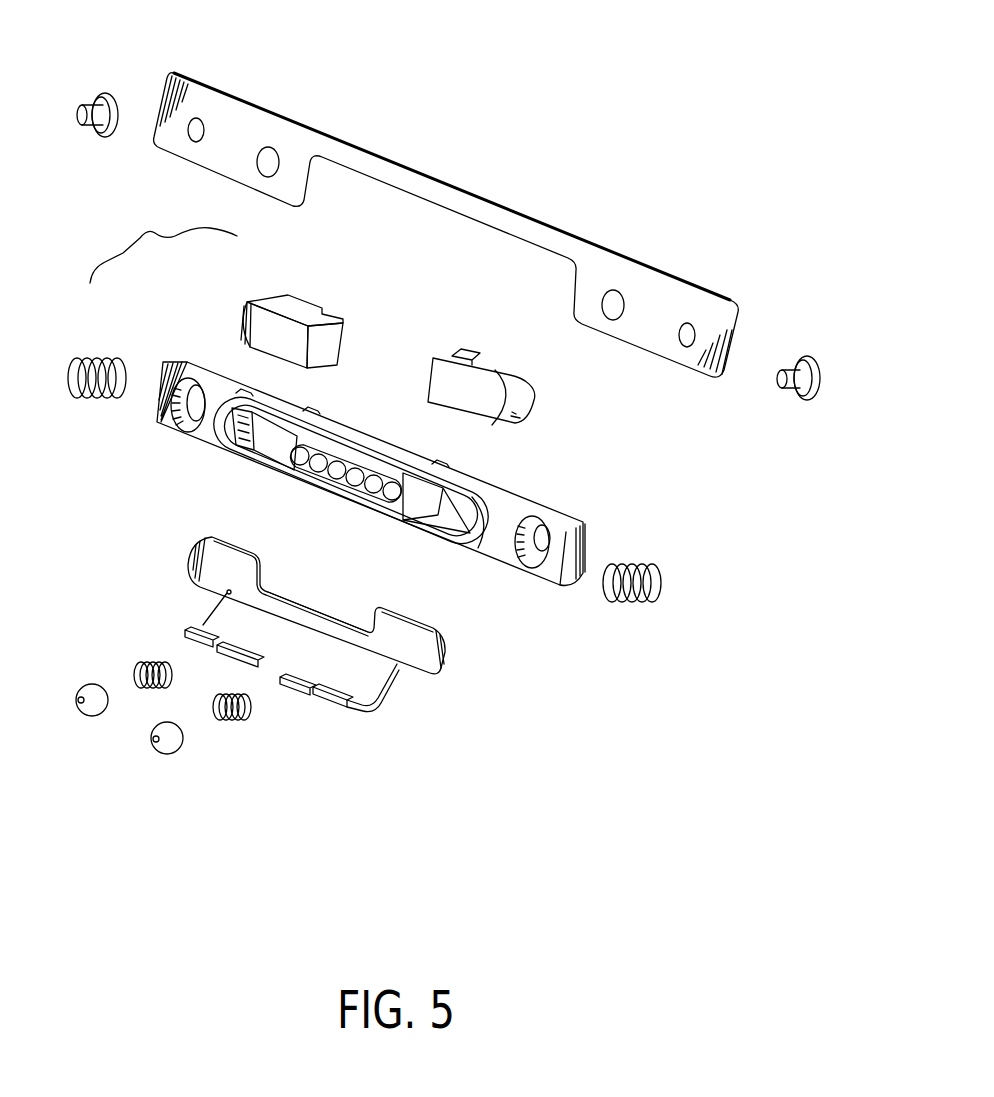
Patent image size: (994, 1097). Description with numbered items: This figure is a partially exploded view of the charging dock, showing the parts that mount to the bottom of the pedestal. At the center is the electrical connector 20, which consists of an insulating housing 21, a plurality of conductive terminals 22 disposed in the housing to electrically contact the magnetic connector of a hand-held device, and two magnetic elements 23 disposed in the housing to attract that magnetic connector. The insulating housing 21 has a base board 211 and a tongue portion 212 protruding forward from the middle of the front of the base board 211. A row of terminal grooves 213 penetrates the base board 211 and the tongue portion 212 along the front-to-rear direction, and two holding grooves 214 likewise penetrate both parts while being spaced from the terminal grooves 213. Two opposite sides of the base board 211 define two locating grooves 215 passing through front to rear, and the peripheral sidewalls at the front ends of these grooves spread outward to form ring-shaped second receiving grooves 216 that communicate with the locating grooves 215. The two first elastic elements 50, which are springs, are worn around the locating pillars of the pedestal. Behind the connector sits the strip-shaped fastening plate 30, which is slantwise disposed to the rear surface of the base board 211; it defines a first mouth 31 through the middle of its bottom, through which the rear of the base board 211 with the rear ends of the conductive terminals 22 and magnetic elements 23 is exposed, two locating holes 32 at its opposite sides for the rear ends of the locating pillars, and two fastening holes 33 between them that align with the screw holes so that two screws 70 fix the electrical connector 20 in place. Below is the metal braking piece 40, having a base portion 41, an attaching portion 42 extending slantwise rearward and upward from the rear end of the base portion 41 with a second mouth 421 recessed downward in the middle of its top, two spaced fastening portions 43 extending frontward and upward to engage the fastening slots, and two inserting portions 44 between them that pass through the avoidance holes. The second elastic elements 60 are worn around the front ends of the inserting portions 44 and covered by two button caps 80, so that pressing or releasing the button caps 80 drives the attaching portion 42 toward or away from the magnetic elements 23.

The electrical connector 20 is at (163, 240).
The insulating housing 21 is at (371, 451).
The conductive terminals 22 is at (305, 462).
The magnetic element 23 is at (270, 333).
The fastening plate 30 is at (464, 195).
The first mouth 31 is at (427, 217).
The locating holes 32 is at (196, 125).
The fastening holes 33 is at (268, 165).
The metal braking piece 40 is at (317, 622).
The base portion 41 is at (357, 670).
The attaching portion 42 is at (403, 640).
The fastening portions 43 is at (340, 692).
The inserting portion 44 is at (297, 687).
The first elastic elements 50 is at (103, 393).
The second elastic elements 60 is at (140, 665).
The screws 70 is at (96, 126).
The button caps 80 is at (88, 697).
The base board 211 is at (480, 490).
The tongue portion 212 is at (483, 553).
The terminal grooves 213 is at (357, 467).
The holding grooves 214 is at (453, 513).
The locating grooves 215 is at (552, 542).
The second receiving grooves 216 is at (527, 573).
The second mouth 421 is at (328, 600).